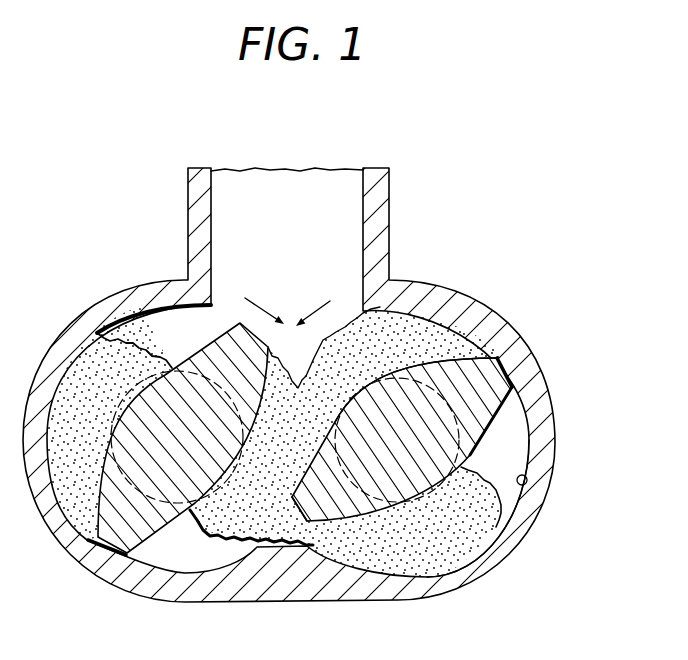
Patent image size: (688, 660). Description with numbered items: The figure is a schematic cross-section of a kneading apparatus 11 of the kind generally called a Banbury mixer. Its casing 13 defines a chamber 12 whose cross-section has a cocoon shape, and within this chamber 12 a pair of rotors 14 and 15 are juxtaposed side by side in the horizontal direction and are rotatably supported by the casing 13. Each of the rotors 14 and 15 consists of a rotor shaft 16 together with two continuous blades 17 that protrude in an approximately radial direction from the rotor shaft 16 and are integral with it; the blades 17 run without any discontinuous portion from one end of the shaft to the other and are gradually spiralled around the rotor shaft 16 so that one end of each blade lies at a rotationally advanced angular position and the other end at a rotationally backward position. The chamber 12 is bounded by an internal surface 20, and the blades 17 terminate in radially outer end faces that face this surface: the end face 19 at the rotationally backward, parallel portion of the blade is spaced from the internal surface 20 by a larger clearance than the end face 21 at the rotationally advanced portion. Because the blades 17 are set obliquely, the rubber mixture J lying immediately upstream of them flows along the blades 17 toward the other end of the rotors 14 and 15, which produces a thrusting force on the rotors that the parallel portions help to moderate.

The kneading apparatus 11 is at (344, 330).
The chamber 12 is at (518, 449).
The casing 13 is at (548, 385).
The rotor 14 is at (400, 439).
The rotor 15 is at (158, 541).
The rotor shaft 16 is at (463, 359).
The continuous blade 17 is at (485, 355).
The radially outer end face 19 is at (549, 350).
The radially outer end face 21 is at (503, 357).
The internal surface 20 is at (526, 485).
The rubber mixture J is at (462, 543).